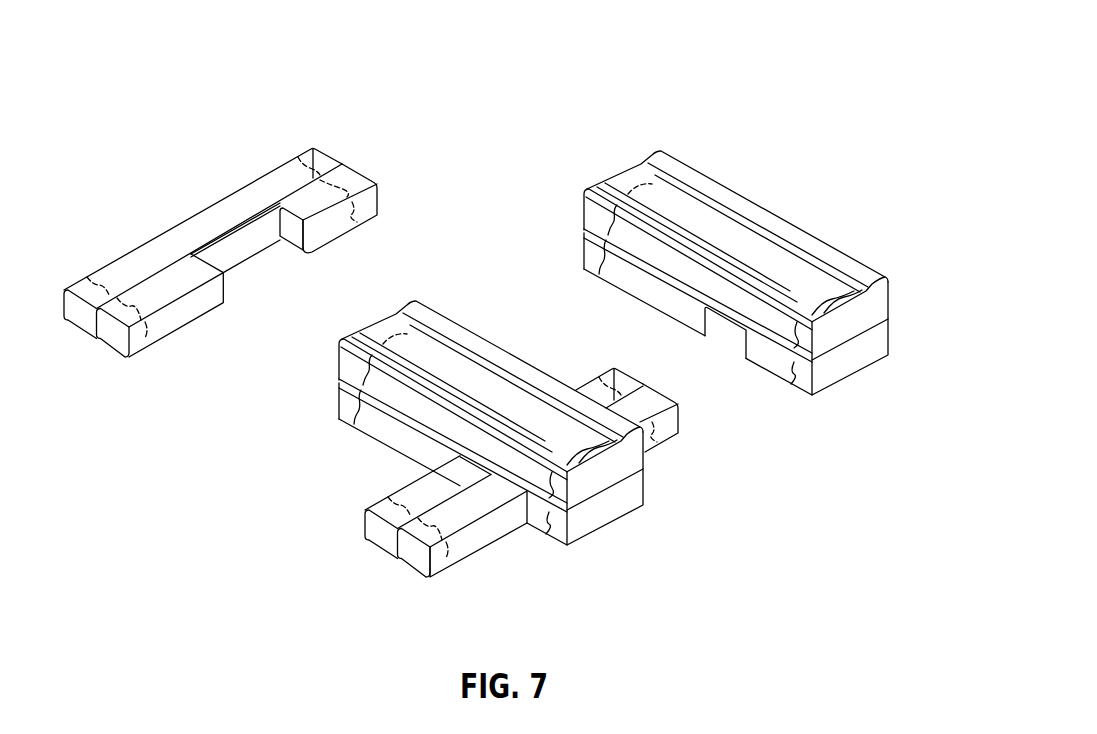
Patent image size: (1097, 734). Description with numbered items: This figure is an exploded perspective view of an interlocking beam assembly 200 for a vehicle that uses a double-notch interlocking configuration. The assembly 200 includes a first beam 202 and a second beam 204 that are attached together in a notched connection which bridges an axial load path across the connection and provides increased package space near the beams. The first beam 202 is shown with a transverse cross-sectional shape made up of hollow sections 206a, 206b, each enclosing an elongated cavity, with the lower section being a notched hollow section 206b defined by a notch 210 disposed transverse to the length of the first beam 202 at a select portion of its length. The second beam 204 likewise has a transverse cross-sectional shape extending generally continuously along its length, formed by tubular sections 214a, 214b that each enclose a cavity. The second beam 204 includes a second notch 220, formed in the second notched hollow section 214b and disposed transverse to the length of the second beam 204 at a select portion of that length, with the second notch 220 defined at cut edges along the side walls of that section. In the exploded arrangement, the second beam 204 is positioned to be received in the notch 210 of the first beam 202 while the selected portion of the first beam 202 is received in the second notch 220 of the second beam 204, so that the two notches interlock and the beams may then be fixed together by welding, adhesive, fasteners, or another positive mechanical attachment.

The interlocking beam assembly 200 is at (722, 98).
The first beam 202 is at (835, 231).
The second beam 204 is at (153, 224).
The hollow section 206a is at (593, 218).
The notched hollow section 206b is at (593, 253).
The notch 210 is at (735, 352).
The tubular section 214a is at (320, 162).
The second notched hollow section 214b is at (357, 180).
The second notch 220 is at (263, 276).